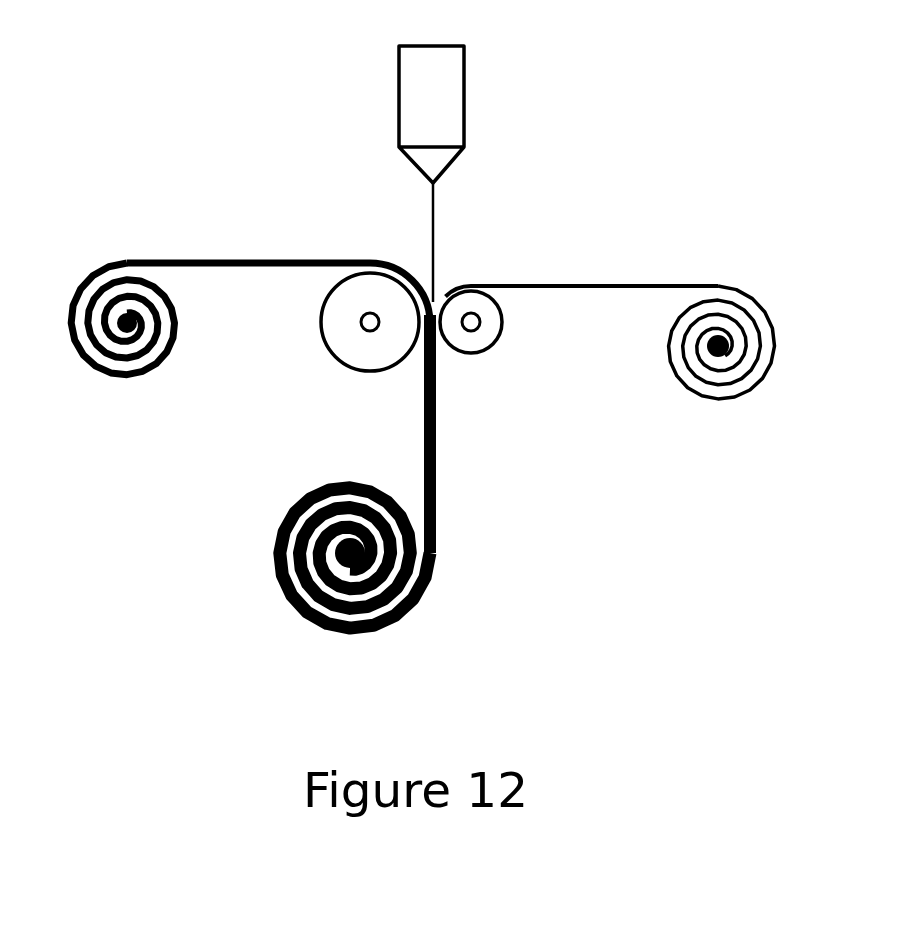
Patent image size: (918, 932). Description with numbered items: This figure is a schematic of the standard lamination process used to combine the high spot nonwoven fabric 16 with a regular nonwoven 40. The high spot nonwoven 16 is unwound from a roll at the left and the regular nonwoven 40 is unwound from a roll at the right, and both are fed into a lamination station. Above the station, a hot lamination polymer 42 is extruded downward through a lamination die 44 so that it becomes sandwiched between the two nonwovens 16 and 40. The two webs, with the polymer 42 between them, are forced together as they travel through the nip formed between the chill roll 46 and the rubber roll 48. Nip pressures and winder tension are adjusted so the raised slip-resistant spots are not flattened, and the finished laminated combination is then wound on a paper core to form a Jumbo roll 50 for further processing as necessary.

The high spot nonwoven fabric 16 is at (250, 260).
The regular nonwoven 40 is at (607, 285).
The hot lamination polymer 42 is at (433, 263).
The lamination die 44 is at (465, 98).
The chill roll 46 is at (330, 355).
The rubber roll 48 is at (498, 338).
The Jumbo roll 50 is at (273, 548).